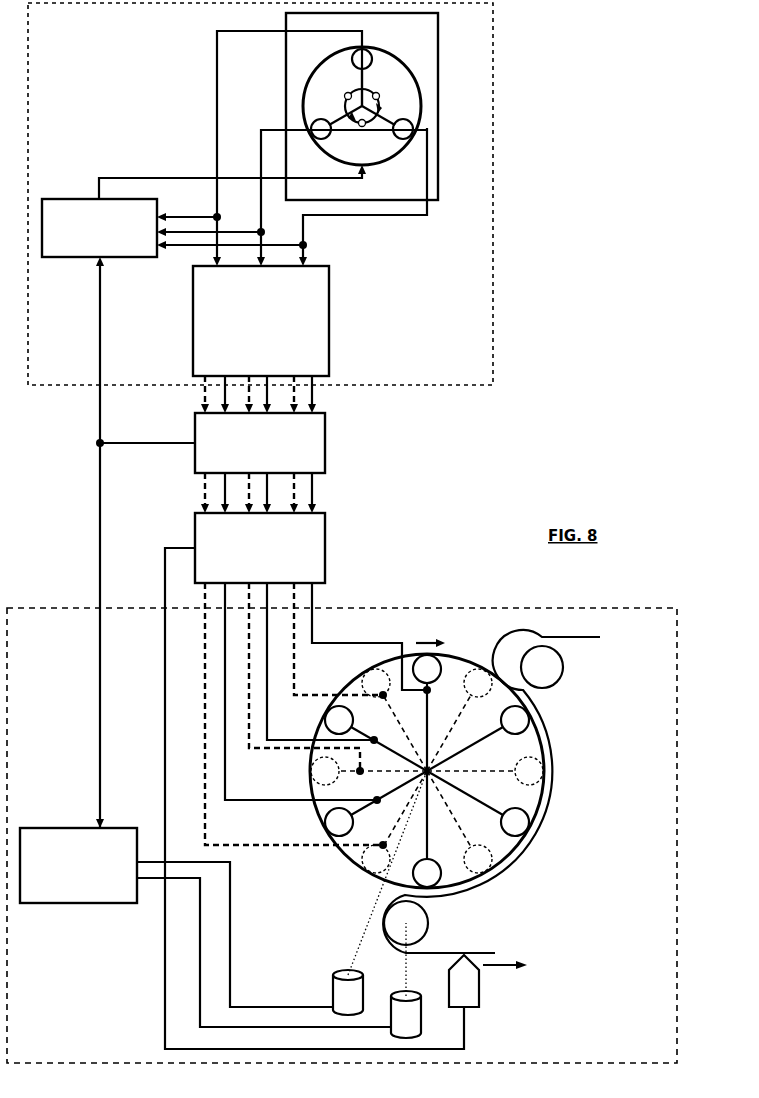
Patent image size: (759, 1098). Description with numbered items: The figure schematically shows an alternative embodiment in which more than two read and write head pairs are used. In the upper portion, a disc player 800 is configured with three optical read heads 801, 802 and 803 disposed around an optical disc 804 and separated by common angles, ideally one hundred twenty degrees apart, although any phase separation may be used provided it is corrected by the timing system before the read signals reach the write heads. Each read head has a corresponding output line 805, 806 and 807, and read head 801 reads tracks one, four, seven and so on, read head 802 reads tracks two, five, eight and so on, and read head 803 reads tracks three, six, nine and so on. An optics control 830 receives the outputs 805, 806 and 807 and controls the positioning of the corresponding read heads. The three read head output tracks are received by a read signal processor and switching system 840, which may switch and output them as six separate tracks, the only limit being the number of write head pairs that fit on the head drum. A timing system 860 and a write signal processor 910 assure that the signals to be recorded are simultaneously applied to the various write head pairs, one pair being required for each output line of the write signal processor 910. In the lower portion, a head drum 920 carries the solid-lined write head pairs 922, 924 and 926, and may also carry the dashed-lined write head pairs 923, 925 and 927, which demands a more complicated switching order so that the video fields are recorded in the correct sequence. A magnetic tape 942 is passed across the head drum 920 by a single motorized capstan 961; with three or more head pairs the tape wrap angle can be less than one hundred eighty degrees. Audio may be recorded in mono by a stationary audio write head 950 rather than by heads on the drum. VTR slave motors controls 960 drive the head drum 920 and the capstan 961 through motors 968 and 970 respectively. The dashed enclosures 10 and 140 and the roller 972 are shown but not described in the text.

The read/optical section 10 is at (28, 134).
The video tape recorder section 140 is at (619, 610).
The disc player 800 is at (285, 25).
The optical read head 801 is at (368, 64).
The optical read head 802 is at (416, 117).
The optical read head 803 is at (330, 135).
The optical disc 804 is at (406, 94).
The output line 805 is at (217, 88).
The output line 806 is at (373, 215).
The output line 807 is at (265, 131).
The optics control 830 is at (130, 258).
The read signal processor and switching system 840 is at (362, 281).
The timing system 860 is at (325, 456).
The write signal processor 910 is at (325, 548).
The head drum 920 is at (390, 875).
The write head pair 922 is at (438, 658).
The write head pair 923 is at (372, 682).
The write head pair 924 is at (329, 720).
The write head pair 925 is at (313, 770).
The write head pair 926 is at (326, 822).
The write head pair 927 is at (368, 856).
The magnetic tape 942 is at (582, 639).
The stationary audio write head 950 is at (476, 984).
The VTR slave motors controls 960 is at (58, 828).
The capstan 961 is at (427, 921).
The motor 968 is at (335, 993).
The motor 970 is at (396, 1035).
The guide roller 972 is at (558, 682).